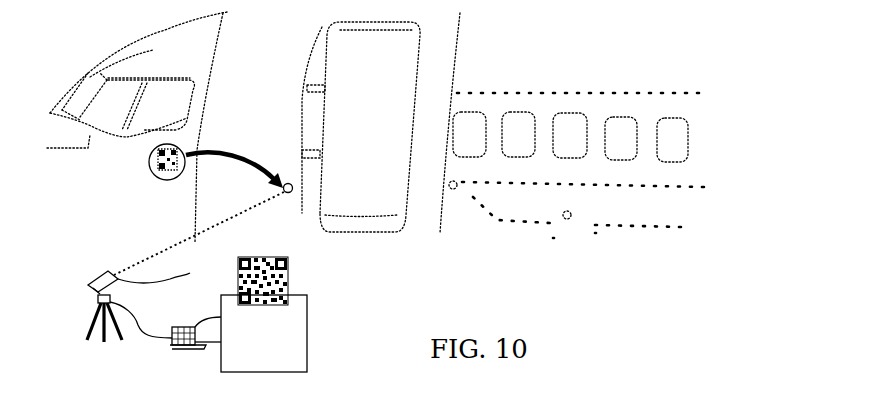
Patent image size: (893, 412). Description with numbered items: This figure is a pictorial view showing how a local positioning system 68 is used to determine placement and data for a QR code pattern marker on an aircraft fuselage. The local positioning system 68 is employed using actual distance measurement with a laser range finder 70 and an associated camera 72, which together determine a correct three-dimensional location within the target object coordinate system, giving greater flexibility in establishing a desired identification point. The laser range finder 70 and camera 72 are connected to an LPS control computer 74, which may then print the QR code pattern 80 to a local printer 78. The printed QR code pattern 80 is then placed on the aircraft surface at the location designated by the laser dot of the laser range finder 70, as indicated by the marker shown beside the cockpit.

The local positioning system 68 is at (97, 318).
The laser range finder 70 is at (160, 302).
The camera 72 is at (87, 286).
The LPS control computer 74 is at (182, 346).
The local printer 78 is at (288, 342).
The QR code pattern 80 is at (160, 171).